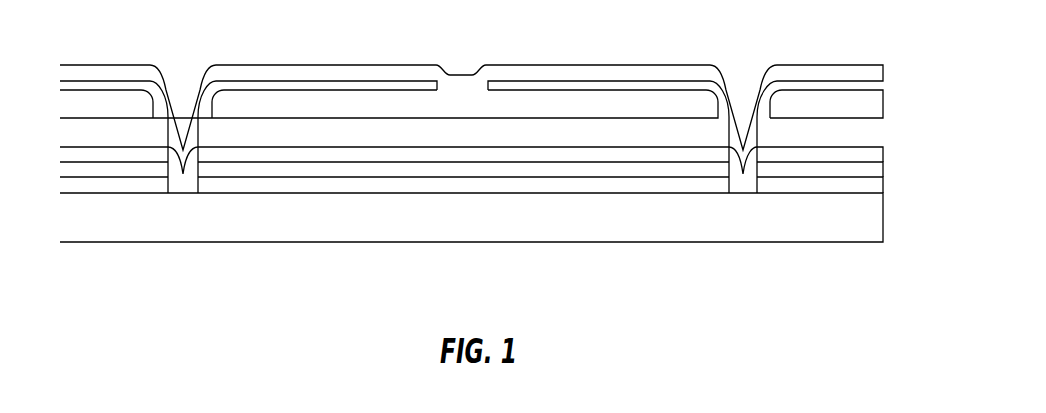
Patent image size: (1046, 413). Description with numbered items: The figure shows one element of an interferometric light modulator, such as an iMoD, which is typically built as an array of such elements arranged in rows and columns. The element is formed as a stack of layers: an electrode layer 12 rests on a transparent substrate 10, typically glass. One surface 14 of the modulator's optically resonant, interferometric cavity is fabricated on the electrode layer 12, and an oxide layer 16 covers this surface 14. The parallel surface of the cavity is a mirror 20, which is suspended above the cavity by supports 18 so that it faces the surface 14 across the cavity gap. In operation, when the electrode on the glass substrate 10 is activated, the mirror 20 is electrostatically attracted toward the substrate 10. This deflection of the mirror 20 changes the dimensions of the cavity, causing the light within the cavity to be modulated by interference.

The transparent substrate 10 is at (877, 227).
The electrode layer 12 is at (877, 183).
The surface 14 is at (877, 170).
The oxide layer 16 is at (882, 148).
The supports 18 is at (555, 66).
The mirror 20 is at (602, 118).